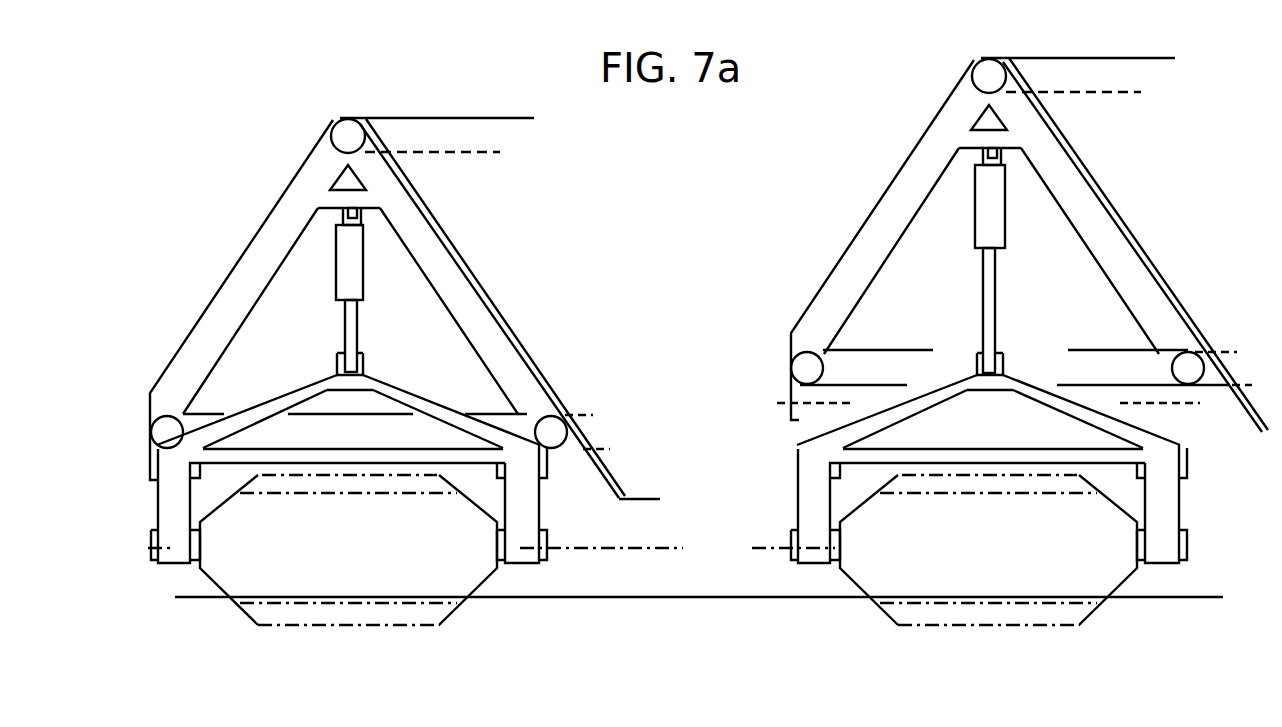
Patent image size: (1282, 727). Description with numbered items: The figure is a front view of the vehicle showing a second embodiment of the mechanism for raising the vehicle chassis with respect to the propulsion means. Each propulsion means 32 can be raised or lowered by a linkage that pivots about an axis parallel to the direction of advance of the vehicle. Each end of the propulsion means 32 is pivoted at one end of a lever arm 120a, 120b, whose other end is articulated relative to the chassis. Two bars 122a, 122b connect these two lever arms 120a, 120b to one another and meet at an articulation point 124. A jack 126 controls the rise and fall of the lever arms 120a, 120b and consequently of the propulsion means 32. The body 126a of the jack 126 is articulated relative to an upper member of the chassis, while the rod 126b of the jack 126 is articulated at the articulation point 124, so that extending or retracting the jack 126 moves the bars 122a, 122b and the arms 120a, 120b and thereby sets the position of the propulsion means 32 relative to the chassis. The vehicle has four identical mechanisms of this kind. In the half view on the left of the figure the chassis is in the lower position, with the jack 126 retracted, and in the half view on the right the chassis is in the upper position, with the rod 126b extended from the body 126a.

The jack 126 is at (401, 275).
The body 126a is at (353, 278).
The rod 126b is at (353, 328).
The articulation point 124 is at (333, 362).
The bar 122a is at (265, 405).
The bar 122b is at (447, 407).
The lever arm 120a is at (173, 542).
The lever arm 120b is at (533, 513).
The propulsion means 32 is at (434, 620).